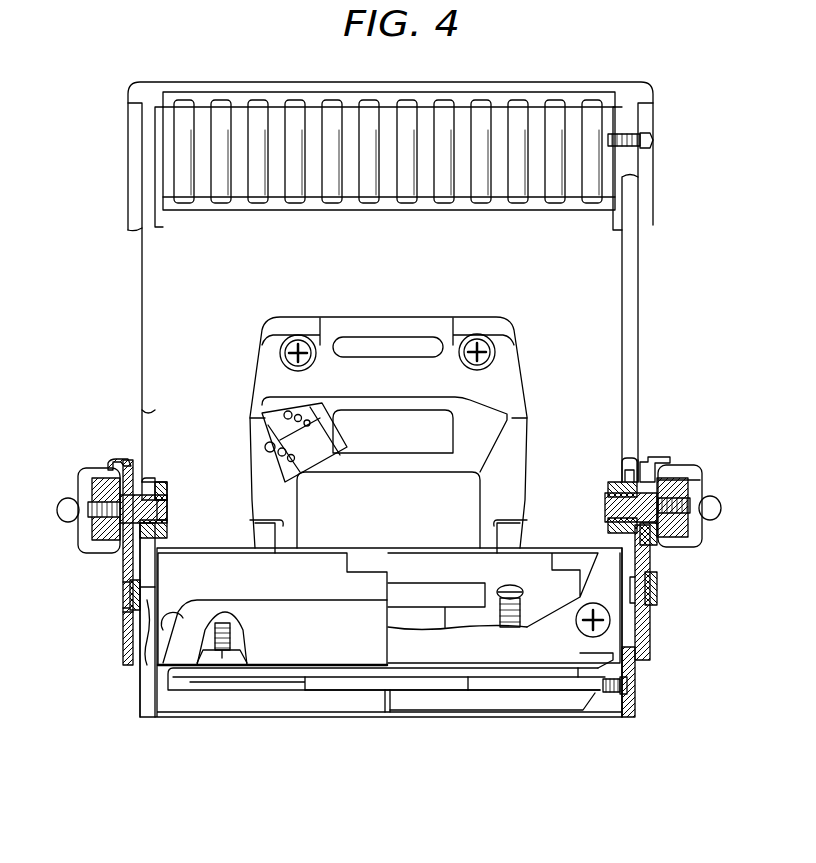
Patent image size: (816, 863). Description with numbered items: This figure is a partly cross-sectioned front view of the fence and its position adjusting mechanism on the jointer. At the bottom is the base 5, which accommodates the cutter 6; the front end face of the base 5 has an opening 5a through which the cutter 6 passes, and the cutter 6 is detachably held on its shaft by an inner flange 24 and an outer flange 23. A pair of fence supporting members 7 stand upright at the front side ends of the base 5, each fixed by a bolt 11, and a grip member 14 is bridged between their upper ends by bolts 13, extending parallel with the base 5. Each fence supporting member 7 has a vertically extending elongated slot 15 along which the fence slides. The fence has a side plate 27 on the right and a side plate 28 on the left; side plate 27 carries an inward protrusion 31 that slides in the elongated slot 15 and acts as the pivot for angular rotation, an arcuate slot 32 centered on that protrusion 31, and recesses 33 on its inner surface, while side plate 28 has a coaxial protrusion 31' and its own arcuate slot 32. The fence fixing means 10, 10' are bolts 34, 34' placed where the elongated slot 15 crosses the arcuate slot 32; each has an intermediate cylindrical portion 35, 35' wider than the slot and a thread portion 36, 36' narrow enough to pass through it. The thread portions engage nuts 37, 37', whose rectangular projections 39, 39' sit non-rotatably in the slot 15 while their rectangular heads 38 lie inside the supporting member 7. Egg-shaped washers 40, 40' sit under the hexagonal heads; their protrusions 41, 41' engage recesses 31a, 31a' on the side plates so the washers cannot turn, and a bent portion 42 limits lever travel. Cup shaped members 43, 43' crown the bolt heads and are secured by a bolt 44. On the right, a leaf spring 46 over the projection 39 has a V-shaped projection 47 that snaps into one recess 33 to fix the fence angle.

The base 5 is at (167, 700).
The opening 5a is at (220, 683).
The cutter 6 is at (553, 673).
The fence supporting member 7 is at (640, 255).
The fence fixing means 10 is at (736, 436).
The fence fixing means 10' is at (51, 467).
The bolt 11 is at (635, 692).
The bolt 13 is at (655, 140).
The grip member 14 is at (512, 100).
The elongated slot 15 is at (145, 443).
The outer flange 23 is at (447, 685).
The inner flange 24 is at (467, 660).
The side plate 27 is at (505, 588).
The side plate 28 is at (132, 650).
The protrusion 31 is at (548, 632).
The protrusion 31' is at (267, 609).
The recess 31a is at (658, 677).
The recess 31a' is at (126, 648).
The arcuate slot 32 is at (160, 487).
The recess 33 is at (645, 463).
The bolt 34 is at (702, 502).
The bolt 34' is at (96, 531).
The intermediate cylindrical portion 35 is at (689, 461).
The intermediate cylindrical portion 35' is at (177, 620).
The thread portion 36 is at (608, 512).
The thread portion 36' is at (188, 501).
The nut 37 is at (602, 495).
The nut 37' is at (177, 481).
The rectangular head 38 is at (167, 527).
The rectangular projection 39 is at (611, 458).
The rectangular projection 39' is at (164, 459).
The washer 40 is at (665, 593).
The washer 40' is at (107, 632).
The protrusion 41 is at (674, 601).
The protrusion 41' is at (111, 599).
The bent portion 42 is at (115, 460).
The cup shaped member 43 is at (704, 506).
The cup shaped member 43' is at (81, 510).
The bolt 44 is at (70, 516).
The leaf spring 46 is at (622, 472).
The V-shaped projection 47 is at (640, 460).